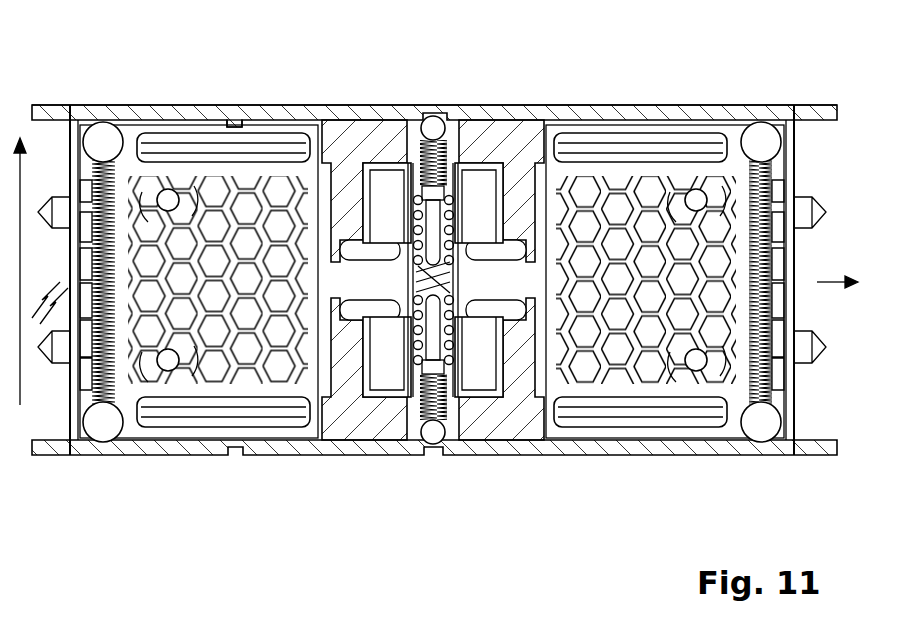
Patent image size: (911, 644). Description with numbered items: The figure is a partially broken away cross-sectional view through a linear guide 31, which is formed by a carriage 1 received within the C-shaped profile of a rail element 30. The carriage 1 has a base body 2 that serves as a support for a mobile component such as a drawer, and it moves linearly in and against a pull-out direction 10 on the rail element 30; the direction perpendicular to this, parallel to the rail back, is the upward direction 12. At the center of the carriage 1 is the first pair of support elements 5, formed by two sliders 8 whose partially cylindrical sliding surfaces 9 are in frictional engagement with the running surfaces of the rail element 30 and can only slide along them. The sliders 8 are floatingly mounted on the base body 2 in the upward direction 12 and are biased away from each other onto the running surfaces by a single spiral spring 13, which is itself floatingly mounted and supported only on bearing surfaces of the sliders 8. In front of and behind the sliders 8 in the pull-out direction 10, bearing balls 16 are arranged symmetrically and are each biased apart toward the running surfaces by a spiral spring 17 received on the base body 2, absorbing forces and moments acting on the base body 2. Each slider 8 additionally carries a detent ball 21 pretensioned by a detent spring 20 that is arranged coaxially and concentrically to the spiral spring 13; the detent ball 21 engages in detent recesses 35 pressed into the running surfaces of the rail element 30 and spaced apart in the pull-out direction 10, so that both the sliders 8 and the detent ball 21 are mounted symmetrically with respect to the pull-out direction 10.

The carriage 1 is at (505, 90).
The base body 2 is at (622, 160).
The first pair of support elements 5 is at (327, 90).
The slider 8 is at (477, 130).
The sliding surface 9 is at (363, 120).
The pull-out direction 10 is at (822, 282).
The upward direction 12 is at (14, 285).
The spiral spring 13 is at (440, 277).
The bearing ball 16 is at (88, 123).
The spiral spring 17 is at (778, 205).
The detent spring 20 is at (422, 153).
The detent ball 21 is at (433, 117).
The rail element 30 is at (173, 115).
The linear guide 31 is at (653, 97).
The detent recess 35 is at (230, 103).